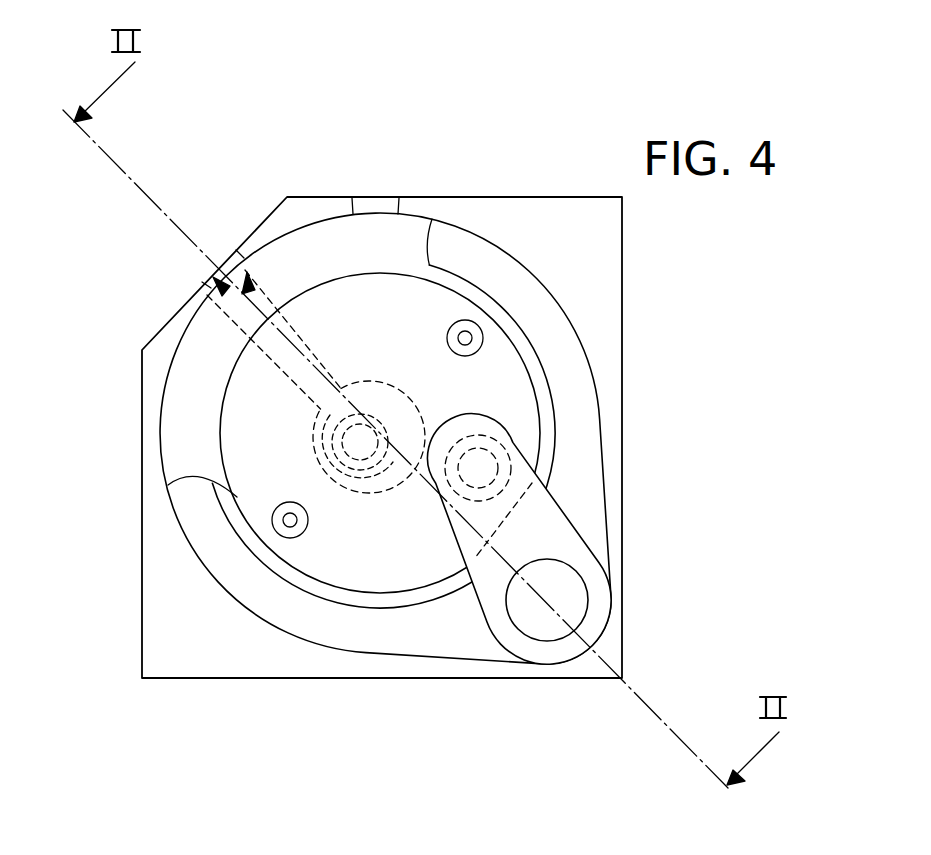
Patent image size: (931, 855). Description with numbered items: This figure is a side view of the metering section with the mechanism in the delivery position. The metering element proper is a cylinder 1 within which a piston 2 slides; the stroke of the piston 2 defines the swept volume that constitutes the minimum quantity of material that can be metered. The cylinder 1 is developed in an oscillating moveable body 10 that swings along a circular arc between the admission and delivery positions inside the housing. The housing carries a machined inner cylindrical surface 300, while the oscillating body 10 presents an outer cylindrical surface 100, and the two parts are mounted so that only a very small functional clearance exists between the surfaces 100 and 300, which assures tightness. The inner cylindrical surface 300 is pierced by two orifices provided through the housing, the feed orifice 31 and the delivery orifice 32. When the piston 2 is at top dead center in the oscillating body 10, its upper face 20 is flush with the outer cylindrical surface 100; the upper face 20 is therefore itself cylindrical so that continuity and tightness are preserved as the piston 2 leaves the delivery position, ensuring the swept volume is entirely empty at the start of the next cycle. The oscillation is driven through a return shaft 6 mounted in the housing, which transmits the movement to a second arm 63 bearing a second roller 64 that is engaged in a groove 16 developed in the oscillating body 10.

The cylinder 1 is at (238, 303).
The piston 2 is at (262, 300).
The return shaft 6 is at (577, 612).
The oscillating moveable body 10 is at (413, 228).
The groove 16 is at (412, 461).
The upper face of the piston 20 is at (210, 270).
The feed orifice 31 is at (368, 206).
The delivery orifice 32 is at (227, 262).
The second arm 63 is at (530, 517).
The second roller 64 is at (518, 441).
The outer cylindrical surface 100 is at (304, 226).
The inner cylindrical surface 300 is at (508, 258).